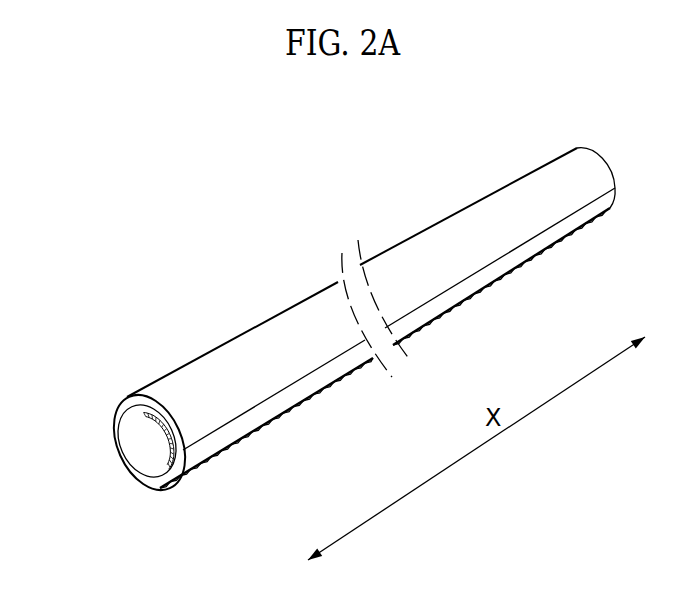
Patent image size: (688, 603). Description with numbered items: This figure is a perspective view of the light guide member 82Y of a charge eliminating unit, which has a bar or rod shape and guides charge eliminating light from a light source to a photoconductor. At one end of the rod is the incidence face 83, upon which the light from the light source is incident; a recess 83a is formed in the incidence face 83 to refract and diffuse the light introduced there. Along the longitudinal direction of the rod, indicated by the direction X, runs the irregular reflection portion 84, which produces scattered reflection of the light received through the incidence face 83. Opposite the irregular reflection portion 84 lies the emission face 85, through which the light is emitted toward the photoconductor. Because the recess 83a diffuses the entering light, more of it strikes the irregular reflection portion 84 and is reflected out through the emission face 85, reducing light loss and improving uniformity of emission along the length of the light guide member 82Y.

The light guide member 82Y is at (318, 321).
The incidence face 83 is at (118, 412).
The recess 83a is at (140, 452).
The irregular reflection portion 84 is at (282, 417).
The emission face 85 is at (473, 215).